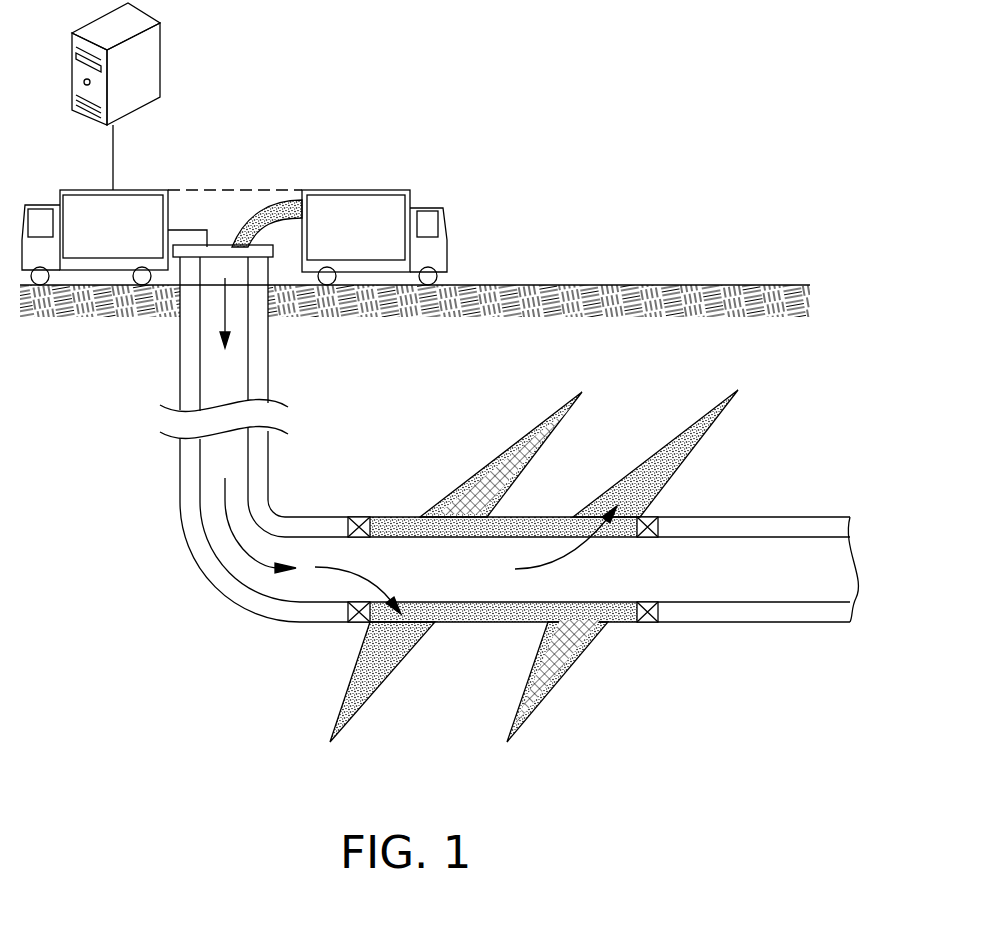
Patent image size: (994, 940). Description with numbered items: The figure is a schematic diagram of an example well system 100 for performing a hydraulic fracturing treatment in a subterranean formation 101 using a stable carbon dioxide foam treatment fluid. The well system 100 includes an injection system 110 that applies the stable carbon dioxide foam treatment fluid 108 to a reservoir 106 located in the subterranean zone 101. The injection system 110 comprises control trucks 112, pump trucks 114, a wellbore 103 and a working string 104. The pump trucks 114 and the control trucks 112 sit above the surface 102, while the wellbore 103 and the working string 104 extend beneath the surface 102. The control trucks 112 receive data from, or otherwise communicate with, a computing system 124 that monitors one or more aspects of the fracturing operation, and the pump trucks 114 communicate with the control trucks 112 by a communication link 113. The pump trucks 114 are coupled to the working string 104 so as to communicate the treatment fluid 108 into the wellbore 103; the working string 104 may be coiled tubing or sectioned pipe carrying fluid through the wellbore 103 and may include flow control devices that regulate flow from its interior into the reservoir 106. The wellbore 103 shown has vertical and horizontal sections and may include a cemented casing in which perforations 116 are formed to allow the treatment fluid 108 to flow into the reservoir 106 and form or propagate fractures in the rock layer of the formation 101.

The well system 100 is at (208, 656).
The subterranean formation 101 is at (708, 372).
The surface 102 is at (624, 284).
The wellbore 103 is at (187, 347).
The working string 104 is at (200, 504).
The reservoir 106 is at (752, 704).
The stable CO2 foam treatment fluid 108 is at (242, 553).
The injection system 110 is at (287, 209).
The control trucks 112 is at (133, 237).
The communication link 113 is at (220, 186).
The pump trucks 114 is at (373, 238).
The perforations / fractures 116 is at (558, 426).
The computing system 124 is at (163, 59).